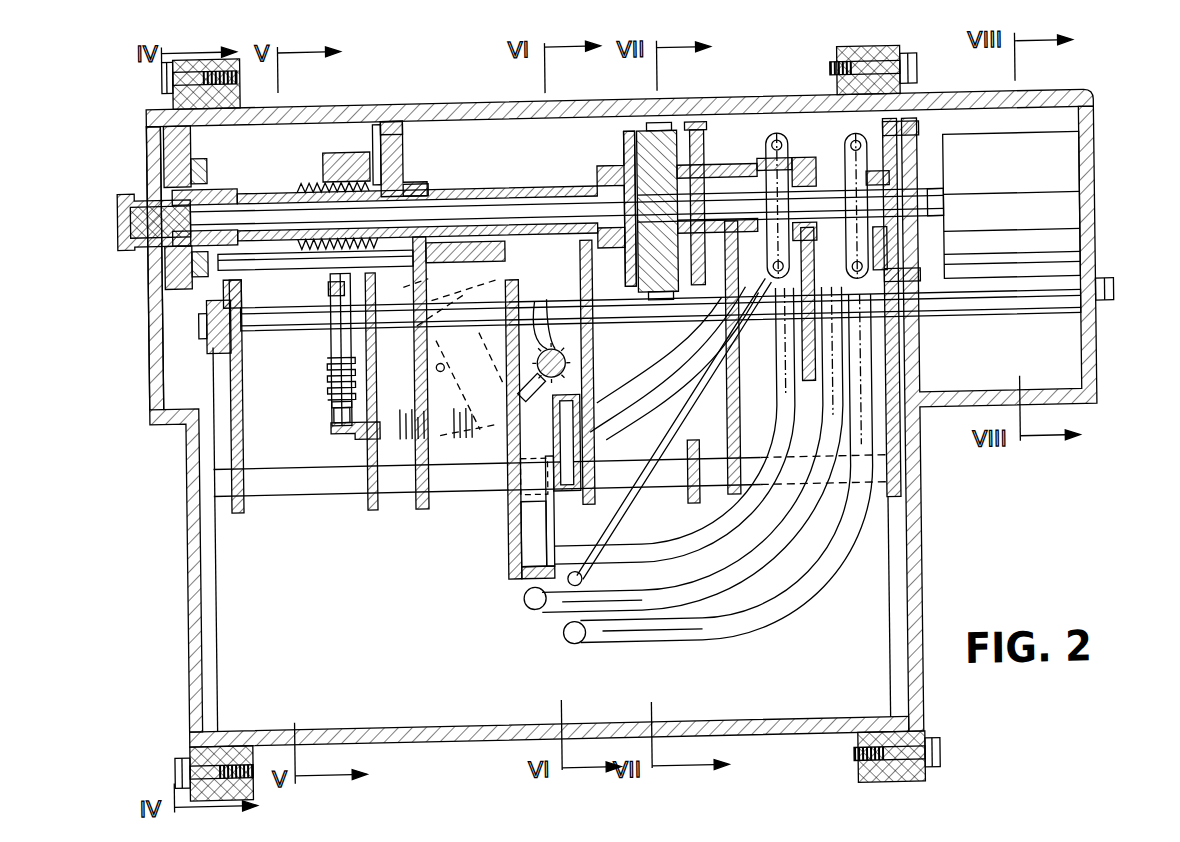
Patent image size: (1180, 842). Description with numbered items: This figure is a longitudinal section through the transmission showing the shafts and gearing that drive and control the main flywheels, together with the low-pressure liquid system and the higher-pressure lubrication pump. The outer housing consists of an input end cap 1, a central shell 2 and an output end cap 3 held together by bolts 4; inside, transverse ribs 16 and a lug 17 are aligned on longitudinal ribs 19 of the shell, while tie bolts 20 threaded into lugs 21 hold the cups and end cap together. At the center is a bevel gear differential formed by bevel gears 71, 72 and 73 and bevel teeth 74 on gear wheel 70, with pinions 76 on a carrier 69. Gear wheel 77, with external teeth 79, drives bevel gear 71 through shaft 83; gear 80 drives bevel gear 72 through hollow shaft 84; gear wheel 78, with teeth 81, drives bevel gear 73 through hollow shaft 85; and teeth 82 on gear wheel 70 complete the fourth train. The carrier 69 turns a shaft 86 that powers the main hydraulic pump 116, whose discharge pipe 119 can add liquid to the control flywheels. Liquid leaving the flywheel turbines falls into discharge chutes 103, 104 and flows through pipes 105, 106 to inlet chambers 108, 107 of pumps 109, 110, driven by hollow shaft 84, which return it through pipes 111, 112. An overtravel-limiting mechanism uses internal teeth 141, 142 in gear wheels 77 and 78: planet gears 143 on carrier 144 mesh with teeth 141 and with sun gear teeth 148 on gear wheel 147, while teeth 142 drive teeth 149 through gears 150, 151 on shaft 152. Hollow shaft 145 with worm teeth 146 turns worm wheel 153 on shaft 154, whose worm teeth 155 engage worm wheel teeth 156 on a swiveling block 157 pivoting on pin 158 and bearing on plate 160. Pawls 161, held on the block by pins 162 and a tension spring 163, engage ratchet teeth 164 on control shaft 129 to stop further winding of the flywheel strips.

The input end cap 1 is at (186, 601).
The central shell 2 is at (374, 738).
The output end cap 3 is at (919, 553).
The bolts 4 is at (166, 68).
The transverse ribs 16 is at (241, 505).
The lug 17 is at (689, 507).
The longitudinal ribs 19 is at (329, 491).
The tie bolts 20 is at (1115, 300).
The lugs 21 is at (208, 328).
The carrier 69 is at (711, 168).
The gear wheel 70 is at (716, 322).
The bevel gear 71 is at (624, 160).
The bevel gear 72 is at (708, 152).
The bevel gear 73 is at (628, 140).
The bevel gear teeth 74 is at (668, 124).
The pinions 76 is at (628, 130).
The gear wheel 77 is at (163, 150).
The gear wheel 78 is at (413, 164).
The external teeth 79 is at (158, 115).
The gear 80 is at (908, 134).
The external teeth 81 is at (408, 124).
The external teeth 82 is at (694, 124).
The shaft 83 is at (513, 186).
The hollow shaft 84 is at (773, 160).
The hollow shaft 85 is at (471, 186).
The shaft 86 is at (947, 232).
The turbine discharge chute 103 is at (547, 519).
The turbine discharge chute 104 is at (536, 461).
The pipe 105 is at (774, 529).
The pipe 106 is at (698, 366).
The inlet chamber 107 is at (753, 163).
The inlet chamber 108 is at (815, 160).
The pump 109 is at (778, 128).
The pump 110 is at (836, 155).
The pipe 111 is at (538, 611).
The pipe 112 is at (810, 605).
The main hydraulic pump 116 is at (1048, 150).
The pipe 119 is at (1001, 319).
The shaft 129 is at (557, 290).
The internal teeth 141 is at (193, 134).
The internal teeth 142 is at (380, 145).
The planet gears 143 is at (203, 156).
The carrier 144 is at (152, 252).
The hollow shaft 145 is at (278, 188).
The worm teeth 146 is at (322, 147).
The gear wheel 147 is at (124, 195).
The sun gear teeth 148 is at (124, 214).
The gear teeth 149 is at (215, 181).
The gear 150 is at (332, 282).
The gear 151 is at (243, 284).
The shaft 152 is at (266, 256).
The worm wheel 153 is at (432, 186).
The shaft 154 is at (332, 406).
The worm teeth 155 is at (331, 384).
The worm wheel teeth 156 is at (361, 447).
The swiveling block 157 is at (509, 443).
The pin 158 is at (458, 370).
The bearing plate 160 is at (331, 342).
The pawls 161 is at (328, 364).
The pins 162 is at (435, 387).
The tension spring 163 is at (499, 388).
The ratchet teeth 164 is at (549, 348).